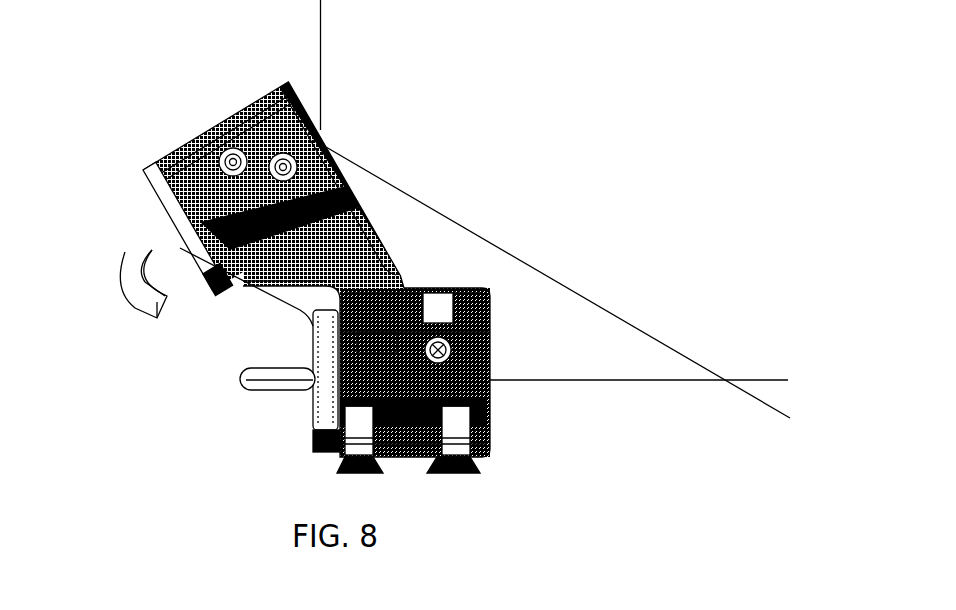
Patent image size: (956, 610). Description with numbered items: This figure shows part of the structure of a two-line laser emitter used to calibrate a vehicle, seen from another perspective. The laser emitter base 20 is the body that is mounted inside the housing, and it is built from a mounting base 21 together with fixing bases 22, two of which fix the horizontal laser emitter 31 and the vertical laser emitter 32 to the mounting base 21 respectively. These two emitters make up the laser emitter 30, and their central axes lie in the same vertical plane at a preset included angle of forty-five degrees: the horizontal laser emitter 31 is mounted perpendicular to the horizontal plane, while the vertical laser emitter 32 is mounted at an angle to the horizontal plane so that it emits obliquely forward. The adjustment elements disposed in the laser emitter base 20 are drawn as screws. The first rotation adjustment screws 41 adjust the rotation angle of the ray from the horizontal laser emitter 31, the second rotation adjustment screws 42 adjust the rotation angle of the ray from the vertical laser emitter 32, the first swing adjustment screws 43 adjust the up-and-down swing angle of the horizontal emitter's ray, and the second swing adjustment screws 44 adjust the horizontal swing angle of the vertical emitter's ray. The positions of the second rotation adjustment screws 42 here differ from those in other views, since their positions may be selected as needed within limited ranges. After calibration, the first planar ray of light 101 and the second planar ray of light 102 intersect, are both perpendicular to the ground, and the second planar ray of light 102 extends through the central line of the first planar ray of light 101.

The laser emitter base 20 is at (181, 244).
The mounting base 21 is at (305, 267).
The fixing bases 22 is at (238, 263).
The laser emitter 30 is at (217, 373).
The horizontal laser emitter 31 is at (277, 375).
The vertical laser emitter 32 is at (157, 320).
The first rotation adjustment screws 41 is at (446, 356).
The second rotation adjustment screws 42 is at (228, 160).
The first swing adjustment screws 43 is at (455, 316).
The second swing adjustment screws 44 is at (288, 158).
The first planar ray of light 101 is at (640, 381).
The second planar ray of light 102 is at (320, 17).